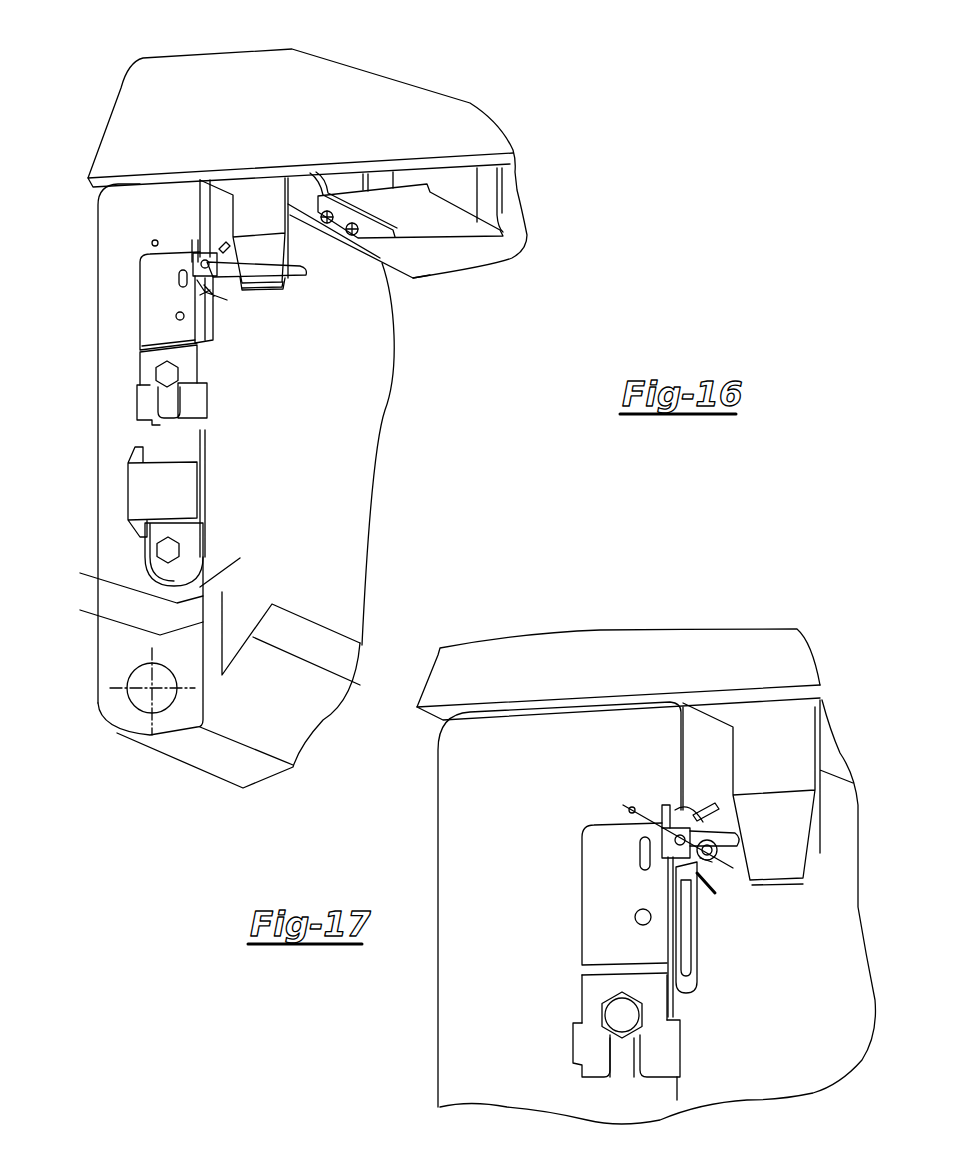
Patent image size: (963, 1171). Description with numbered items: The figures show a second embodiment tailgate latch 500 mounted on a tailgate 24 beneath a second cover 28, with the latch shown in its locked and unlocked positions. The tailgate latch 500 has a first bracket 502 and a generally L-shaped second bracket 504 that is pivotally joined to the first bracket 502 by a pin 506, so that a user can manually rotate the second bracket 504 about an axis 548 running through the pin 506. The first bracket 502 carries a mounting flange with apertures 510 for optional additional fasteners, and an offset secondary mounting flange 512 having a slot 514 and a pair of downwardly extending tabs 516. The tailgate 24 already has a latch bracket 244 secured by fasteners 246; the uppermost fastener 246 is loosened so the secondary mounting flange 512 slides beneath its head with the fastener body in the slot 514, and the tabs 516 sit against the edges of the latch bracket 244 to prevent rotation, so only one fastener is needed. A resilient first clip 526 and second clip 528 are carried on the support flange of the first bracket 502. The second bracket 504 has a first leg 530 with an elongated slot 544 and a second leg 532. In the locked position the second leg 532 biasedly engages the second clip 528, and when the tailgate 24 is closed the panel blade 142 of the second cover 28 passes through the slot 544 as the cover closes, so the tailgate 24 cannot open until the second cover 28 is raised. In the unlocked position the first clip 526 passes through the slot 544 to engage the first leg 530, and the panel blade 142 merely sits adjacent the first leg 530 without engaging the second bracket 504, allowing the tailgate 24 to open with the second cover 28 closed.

In FIG. 16, the tailgate 24 is at (310, 480).
In FIG. 17, the tailgate 24 is at (453, 1023).
In FIG. 16, the second cover 28 is at (462, 123).
In FIG. 17, the second cover 28 is at (569, 660).
In FIG. 16, the panel blade 142 is at (258, 207).
In FIG. 17, the panel blade 142 is at (752, 722).
In FIG. 16, the latch bracket 244 is at (185, 540).
In FIG. 16, the fasteners 246 is at (176, 372).
In FIG. 17, the fasteners 246 is at (618, 1012).
In FIG. 16, the tailgate latch 500 is at (116, 288).
In FIG. 17, the tailgate latch 500 is at (560, 924).
In FIG. 16, the first bracket 502 is at (138, 260).
In FIG. 17, the first bracket 502 is at (584, 836).
In FIG. 16, the second bracket 504 is at (314, 265).
In FIG. 17, the second bracket 504 is at (705, 1002).
In FIG. 16, the pin 506 is at (200, 300).
In FIG. 17, the pin 506 is at (715, 872).
In FIG. 16, the apertures 510 is at (176, 318).
In FIG. 16, the secondary mounting flange 512 is at (190, 363).
In FIG. 17, the secondary mounting flange 512 is at (624, 999).
In FIG. 16, the slot 514 is at (175, 412).
In FIG. 17, the slot 514 is at (617, 1057).
In FIG. 16, the tabs 516 is at (208, 406).
In FIG. 17, the tabs 516 is at (626, 1048).
In FIG. 17, the first clip 526 is at (718, 893).
In FIG. 17, the second clip 528 is at (711, 804).
In FIG. 17, the first leg 530 is at (688, 1000).
In FIG. 16, the second leg 532 is at (200, 258).
In FIG. 17, the second leg 532 is at (660, 826).
In FIG. 16, the elongated slot 544 is at (287, 280).
In FIG. 17, the elongated slot 544 is at (697, 961).
In FIG. 16, the axis 548 is at (157, 240).
In FIG. 17, the axis 548 is at (632, 806).